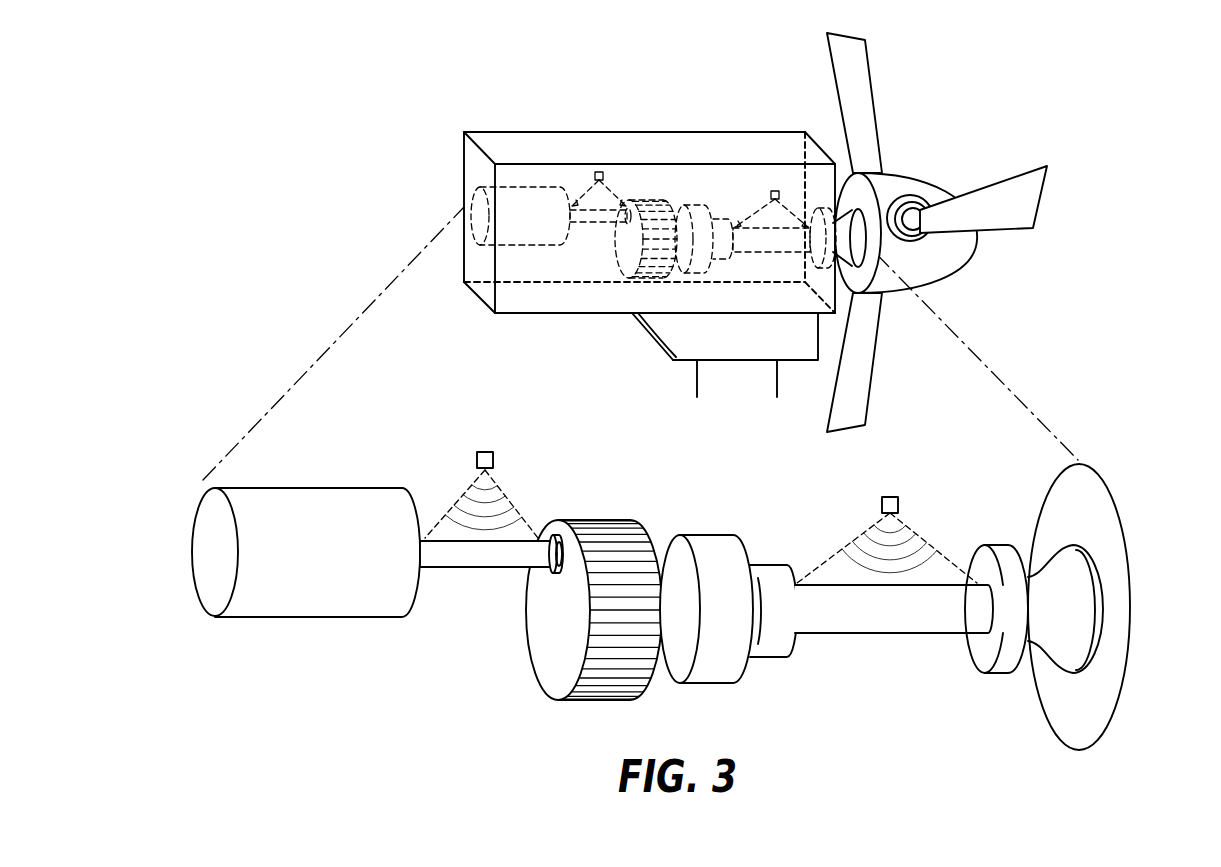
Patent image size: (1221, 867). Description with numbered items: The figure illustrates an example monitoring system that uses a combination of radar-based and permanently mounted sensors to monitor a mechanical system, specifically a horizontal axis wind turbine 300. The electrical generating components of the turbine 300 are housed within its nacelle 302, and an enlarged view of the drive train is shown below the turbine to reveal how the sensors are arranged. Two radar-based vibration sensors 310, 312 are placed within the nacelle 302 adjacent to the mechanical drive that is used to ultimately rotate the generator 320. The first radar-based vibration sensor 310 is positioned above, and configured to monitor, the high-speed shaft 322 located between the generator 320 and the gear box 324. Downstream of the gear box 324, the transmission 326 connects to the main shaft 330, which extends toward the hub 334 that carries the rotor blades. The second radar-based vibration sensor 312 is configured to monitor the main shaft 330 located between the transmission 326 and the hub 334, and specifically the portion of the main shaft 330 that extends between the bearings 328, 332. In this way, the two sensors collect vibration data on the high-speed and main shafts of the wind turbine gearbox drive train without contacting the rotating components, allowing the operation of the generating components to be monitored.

The horizontal axis wind turbine 300 is at (377, 94).
The nacelle 302 is at (633, 132).
The first radar-based vibration sensor 310 is at (487, 452).
The second radar-based vibration sensor 312 is at (893, 492).
The generator 320 is at (307, 617).
The high-speed shaft 322 is at (472, 557).
The gear box 324 is at (592, 518).
The transmission 326 is at (702, 535).
The bearing 328 is at (767, 660).
The main shaft 330 is at (890, 625).
The bearing 332 is at (1008, 657).
The hub 334 is at (1120, 508).